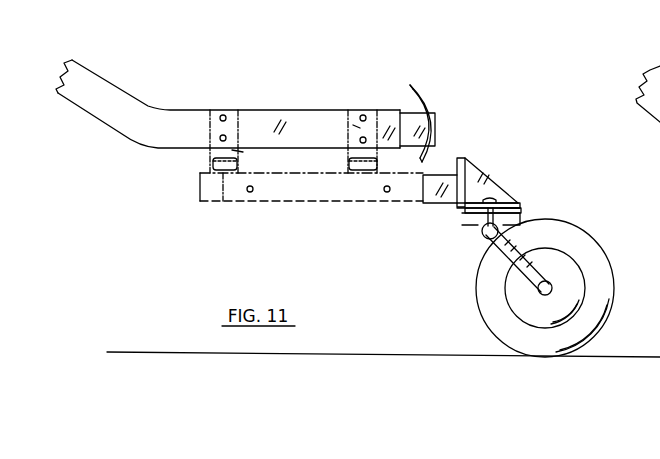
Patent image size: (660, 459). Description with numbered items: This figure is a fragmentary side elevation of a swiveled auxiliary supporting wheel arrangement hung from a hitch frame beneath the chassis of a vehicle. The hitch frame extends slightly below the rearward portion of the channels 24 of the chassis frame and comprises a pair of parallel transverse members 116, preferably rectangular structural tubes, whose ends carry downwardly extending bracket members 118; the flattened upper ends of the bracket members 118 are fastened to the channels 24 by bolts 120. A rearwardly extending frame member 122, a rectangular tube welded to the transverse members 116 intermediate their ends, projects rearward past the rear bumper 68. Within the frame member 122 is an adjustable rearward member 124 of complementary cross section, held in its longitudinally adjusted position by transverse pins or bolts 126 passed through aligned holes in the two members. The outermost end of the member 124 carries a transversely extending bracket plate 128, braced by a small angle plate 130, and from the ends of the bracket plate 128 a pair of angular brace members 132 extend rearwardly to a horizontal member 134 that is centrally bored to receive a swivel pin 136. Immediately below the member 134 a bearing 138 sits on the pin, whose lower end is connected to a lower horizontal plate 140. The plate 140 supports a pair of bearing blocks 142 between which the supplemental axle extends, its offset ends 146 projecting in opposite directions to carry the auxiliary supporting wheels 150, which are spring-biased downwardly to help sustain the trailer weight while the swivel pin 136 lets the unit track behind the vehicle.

The channels 24 is at (110, 117).
The rear bumper 68 is at (427, 95).
The transverse members 116 is at (212, 163).
The bracket members 118 is at (353, 125).
The bolts 120 is at (222, 115).
The frame member 122 is at (215, 202).
The adjustable rearward member 124 is at (445, 195).
The transverse pins or bolts 126 is at (251, 191).
The bracket plate 128 is at (466, 160).
The angle plate 130 is at (451, 166).
The angular brace members 132 is at (472, 173).
The horizontal member 134 is at (515, 204).
The swivel pin 136 is at (493, 200).
The bearing 138 is at (519, 208).
The lower horizontal plate 140 is at (513, 220).
The bearing blocks 142 is at (477, 223).
The opposite ends of the supplemental axle 146 is at (544, 296).
The auxiliary supporting wheels 150 is at (598, 305).